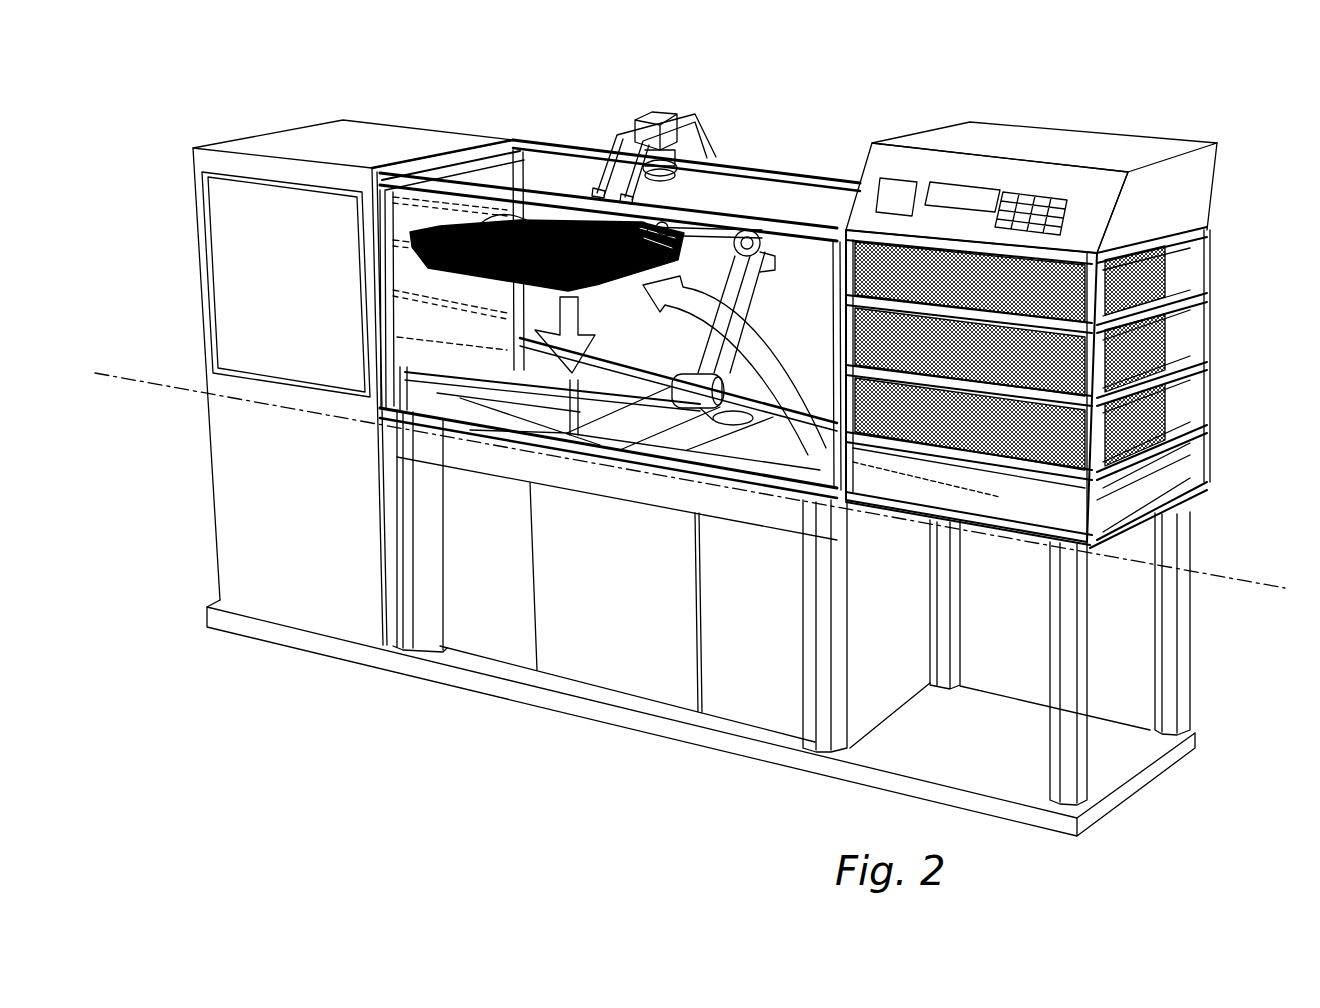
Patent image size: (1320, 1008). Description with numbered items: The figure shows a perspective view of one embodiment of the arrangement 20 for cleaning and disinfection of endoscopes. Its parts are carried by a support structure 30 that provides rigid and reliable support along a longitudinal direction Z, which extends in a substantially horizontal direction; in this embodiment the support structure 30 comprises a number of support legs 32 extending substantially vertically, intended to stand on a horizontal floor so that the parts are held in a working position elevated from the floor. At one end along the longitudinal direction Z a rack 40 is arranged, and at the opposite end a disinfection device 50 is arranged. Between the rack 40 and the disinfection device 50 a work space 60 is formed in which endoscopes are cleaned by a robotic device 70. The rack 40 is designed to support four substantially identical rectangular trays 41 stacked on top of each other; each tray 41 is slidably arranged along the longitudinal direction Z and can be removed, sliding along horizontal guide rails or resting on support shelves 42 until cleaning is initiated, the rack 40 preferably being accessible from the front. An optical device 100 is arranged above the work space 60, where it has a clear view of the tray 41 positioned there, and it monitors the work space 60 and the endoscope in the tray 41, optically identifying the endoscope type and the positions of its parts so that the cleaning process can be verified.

The arrangement 20 is at (765, 178).
The support structure 30 is at (823, 712).
The support legs 32 is at (397, 610).
The rack 40 is at (1220, 357).
The trays 41 is at (578, 225).
The support shelves 42 is at (1200, 340).
The disinfection device 50 is at (295, 147).
The work space 60 is at (517, 430).
The robotic device 70 is at (705, 226).
The optical device 100 is at (671, 101).
The longitudinal direction Z is at (1215, 583).